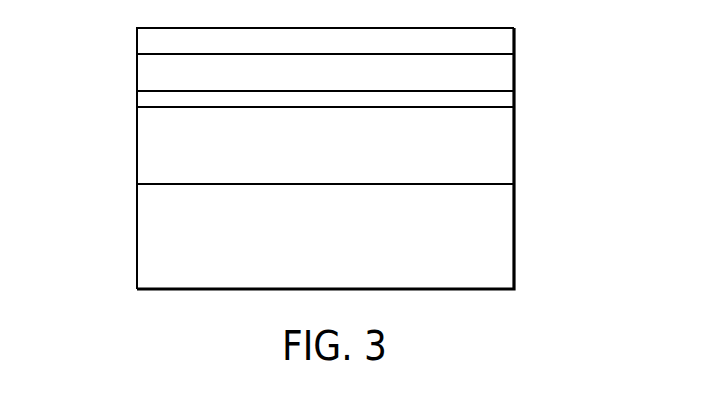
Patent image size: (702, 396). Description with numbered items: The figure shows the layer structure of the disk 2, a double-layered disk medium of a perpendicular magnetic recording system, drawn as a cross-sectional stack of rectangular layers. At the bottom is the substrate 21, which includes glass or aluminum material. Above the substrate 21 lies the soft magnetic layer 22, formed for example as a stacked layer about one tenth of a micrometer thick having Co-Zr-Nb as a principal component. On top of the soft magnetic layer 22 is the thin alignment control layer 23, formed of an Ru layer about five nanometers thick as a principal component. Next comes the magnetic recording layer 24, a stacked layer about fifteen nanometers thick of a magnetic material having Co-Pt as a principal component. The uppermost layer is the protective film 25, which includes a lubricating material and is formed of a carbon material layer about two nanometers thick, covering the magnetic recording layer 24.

The disk 2 is at (102, 124).
The substrate 21 is at (503, 241).
The soft magnetic layer 22 is at (503, 151).
The alignment control layer 23 is at (503, 101).
The magnetic recording layer 24 is at (503, 75).
The protective film 25 is at (503, 43).